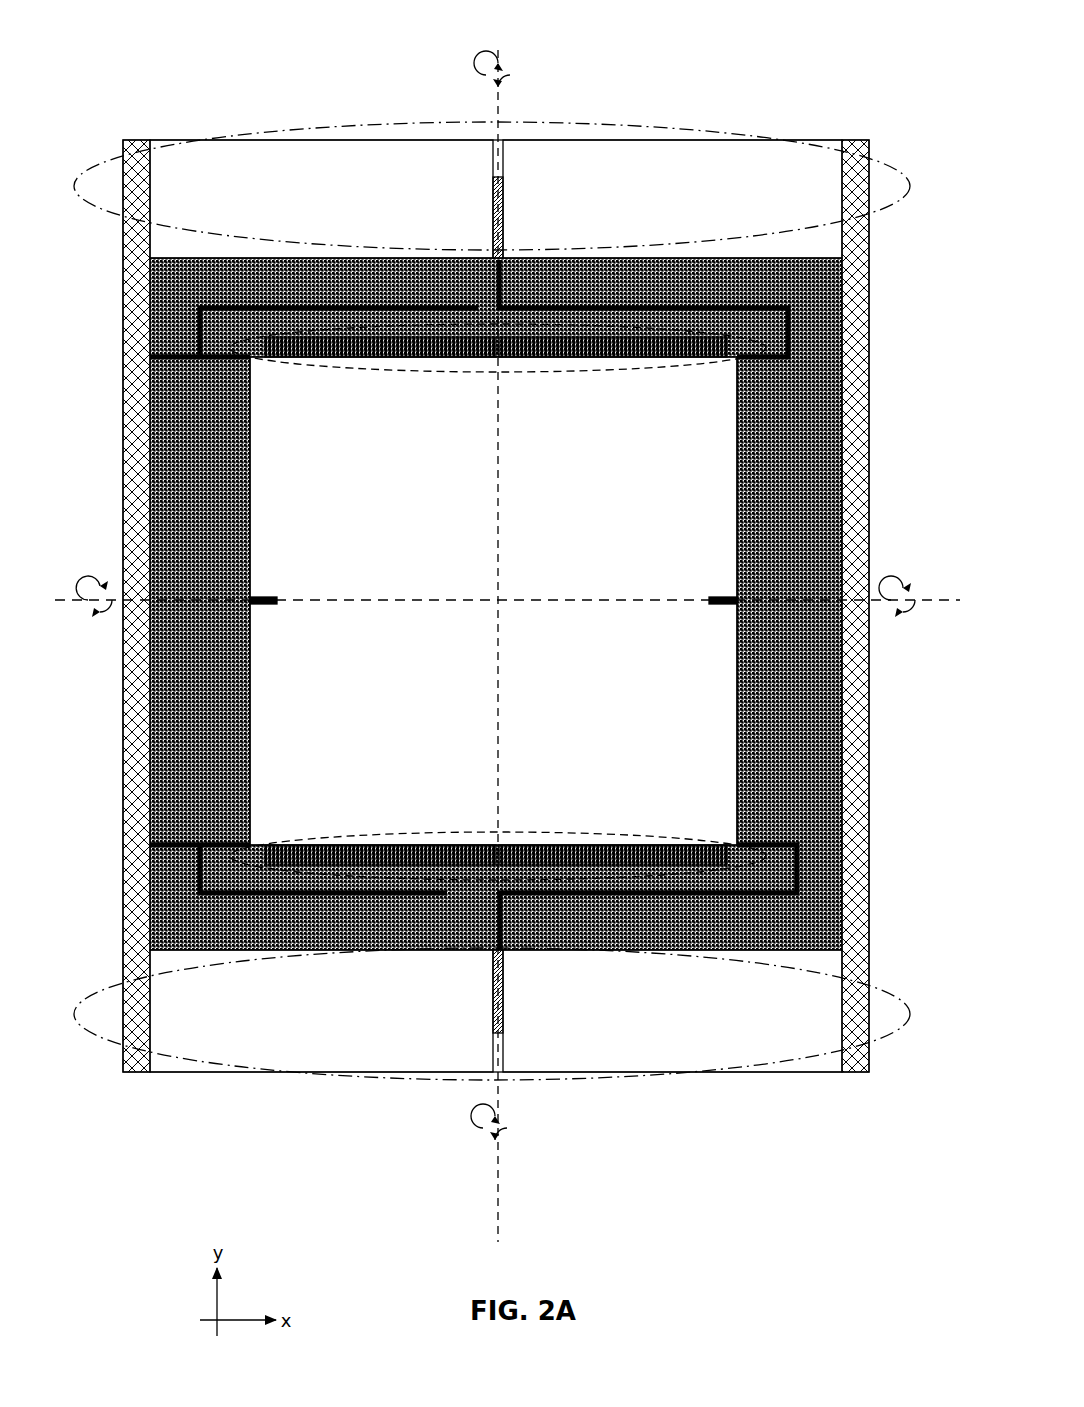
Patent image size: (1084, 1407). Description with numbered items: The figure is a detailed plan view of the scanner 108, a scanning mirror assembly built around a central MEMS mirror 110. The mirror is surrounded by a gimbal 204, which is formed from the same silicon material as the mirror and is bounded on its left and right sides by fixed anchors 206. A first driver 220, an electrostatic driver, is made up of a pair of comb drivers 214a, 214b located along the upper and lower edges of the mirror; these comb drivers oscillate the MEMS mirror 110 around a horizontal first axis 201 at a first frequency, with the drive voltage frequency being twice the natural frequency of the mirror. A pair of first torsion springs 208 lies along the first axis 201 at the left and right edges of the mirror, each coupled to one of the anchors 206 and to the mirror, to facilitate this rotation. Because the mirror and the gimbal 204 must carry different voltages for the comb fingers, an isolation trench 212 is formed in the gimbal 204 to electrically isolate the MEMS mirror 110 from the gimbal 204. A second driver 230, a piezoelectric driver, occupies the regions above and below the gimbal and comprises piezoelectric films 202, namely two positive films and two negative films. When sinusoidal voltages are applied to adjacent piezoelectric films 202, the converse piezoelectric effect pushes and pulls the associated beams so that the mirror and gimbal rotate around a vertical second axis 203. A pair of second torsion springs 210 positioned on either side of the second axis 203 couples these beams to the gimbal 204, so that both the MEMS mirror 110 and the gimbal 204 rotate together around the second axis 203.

The scanner 108 is at (74, 13).
The MEMS mirror 110 is at (474, 627).
The first axis 201 is at (65, 606).
The piezoelectric films 202 is at (690, 1037).
The second axis 203 is at (502, 1205).
The gimbal 204 is at (190, 418).
The anchors 206 is at (142, 138).
The first torsion springs 208 is at (727, 608).
The second torsion springs 210 is at (497, 1005).
The isolation trench 212 is at (677, 305).
The comb driver 214a is at (361, 335).
The comb driver 214b is at (676, 833).
The first driver 220 is at (542, 827).
The second driver 230 is at (723, 1186).